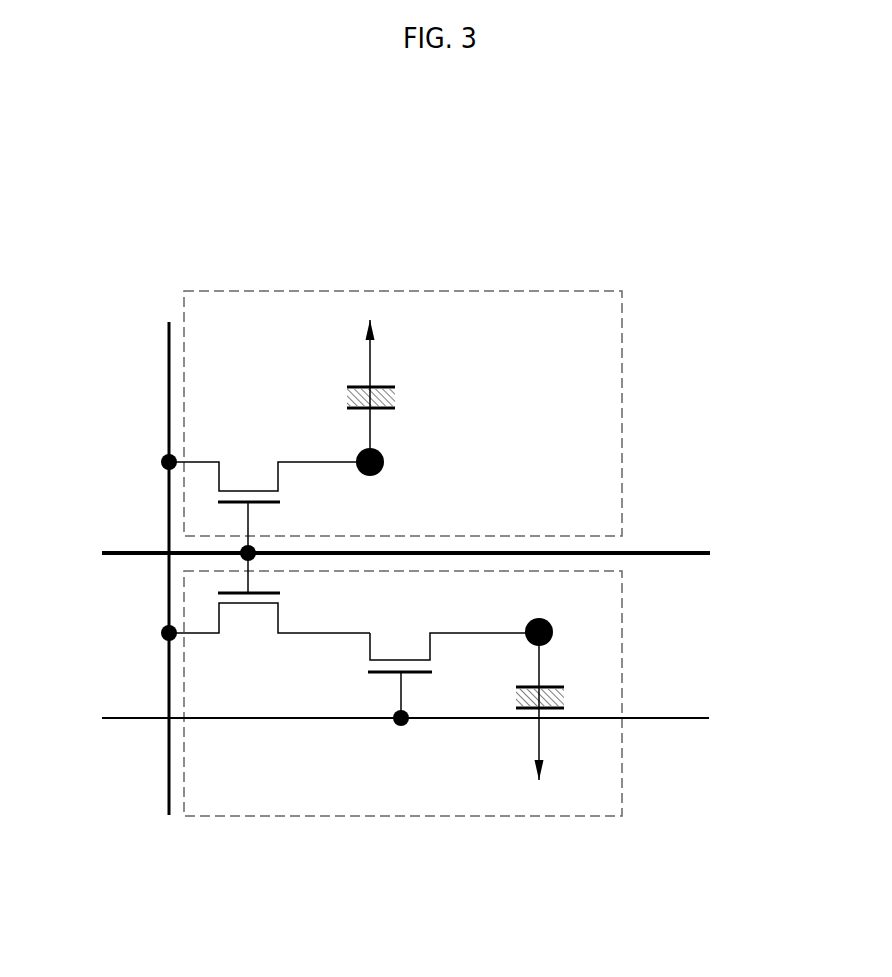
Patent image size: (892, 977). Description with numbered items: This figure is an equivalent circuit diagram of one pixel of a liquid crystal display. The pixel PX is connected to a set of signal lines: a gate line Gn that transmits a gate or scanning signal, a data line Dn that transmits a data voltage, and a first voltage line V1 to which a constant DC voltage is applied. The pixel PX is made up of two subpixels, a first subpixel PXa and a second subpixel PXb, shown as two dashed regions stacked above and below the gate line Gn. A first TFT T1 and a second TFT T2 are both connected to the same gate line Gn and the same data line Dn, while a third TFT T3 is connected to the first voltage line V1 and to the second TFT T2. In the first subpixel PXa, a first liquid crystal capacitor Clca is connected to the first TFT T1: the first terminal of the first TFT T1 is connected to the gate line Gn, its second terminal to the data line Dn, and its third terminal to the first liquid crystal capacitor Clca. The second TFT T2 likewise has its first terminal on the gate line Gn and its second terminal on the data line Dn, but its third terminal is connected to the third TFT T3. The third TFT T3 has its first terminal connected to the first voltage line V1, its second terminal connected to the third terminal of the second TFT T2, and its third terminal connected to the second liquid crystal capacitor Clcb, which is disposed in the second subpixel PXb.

The pixel PX is at (762, 465).
The first subpixel PXa is at (622, 473).
The second subpixel PXb is at (622, 622).
The data line Dn is at (167, 582).
The gate line Gn is at (391, 550).
The first voltage line V1 is at (390, 717).
The first TFT T1 is at (269, 494).
The second TFT T2 is at (269, 595).
The third TFT T3 is at (453, 664).
The first liquid crystal capacitor Clca is at (356, 391).
The second liquid crystal capacitor Clcb is at (562, 706).